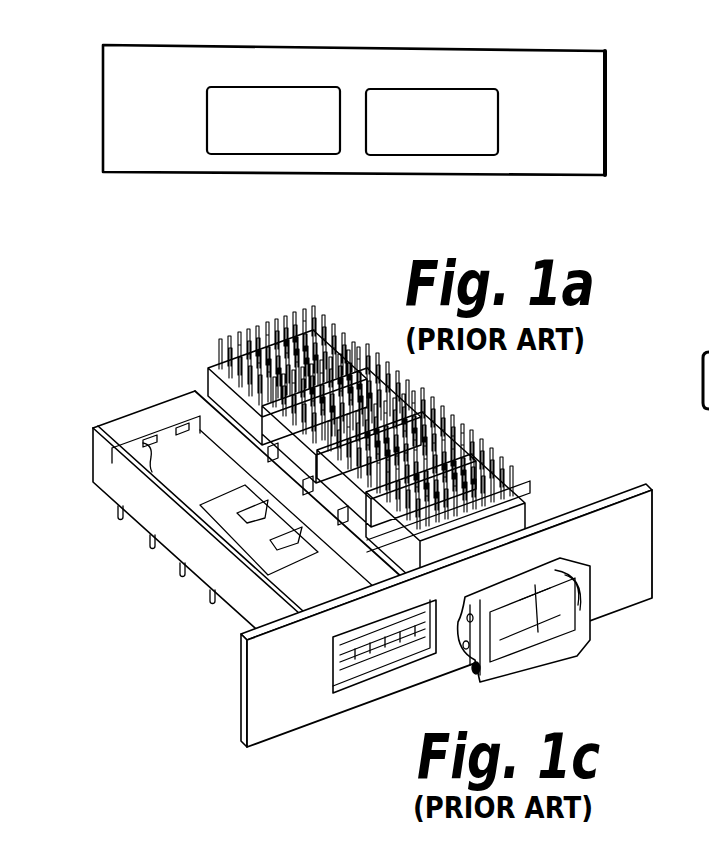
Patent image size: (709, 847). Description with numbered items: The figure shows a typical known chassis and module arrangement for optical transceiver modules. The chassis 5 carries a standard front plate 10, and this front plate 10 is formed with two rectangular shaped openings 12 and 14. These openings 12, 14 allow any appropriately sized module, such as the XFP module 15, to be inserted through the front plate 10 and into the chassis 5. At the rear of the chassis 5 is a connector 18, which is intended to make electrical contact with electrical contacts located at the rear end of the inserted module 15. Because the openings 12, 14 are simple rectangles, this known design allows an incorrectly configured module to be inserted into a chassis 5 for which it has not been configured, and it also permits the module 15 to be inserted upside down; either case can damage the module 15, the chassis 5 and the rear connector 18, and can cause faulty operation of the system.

In FIG. 1c, the chassis 5 is at (180, 538).
In FIG. 1a, the front plate 10 is at (592, 102).
In FIG. 1c, the front plate 10 is at (255, 692).
In FIG. 1a, the opening 12 is at (237, 143).
In FIG. 1c, the opening 12 is at (355, 677).
In FIG. 1a, the opening 14 is at (477, 145).
In FIG. 1c, the opening 14 is at (593, 643).
In FIG. 1c, the XFP module 15 is at (443, 412).
In FIG. 1c, the connector 18 is at (150, 468).